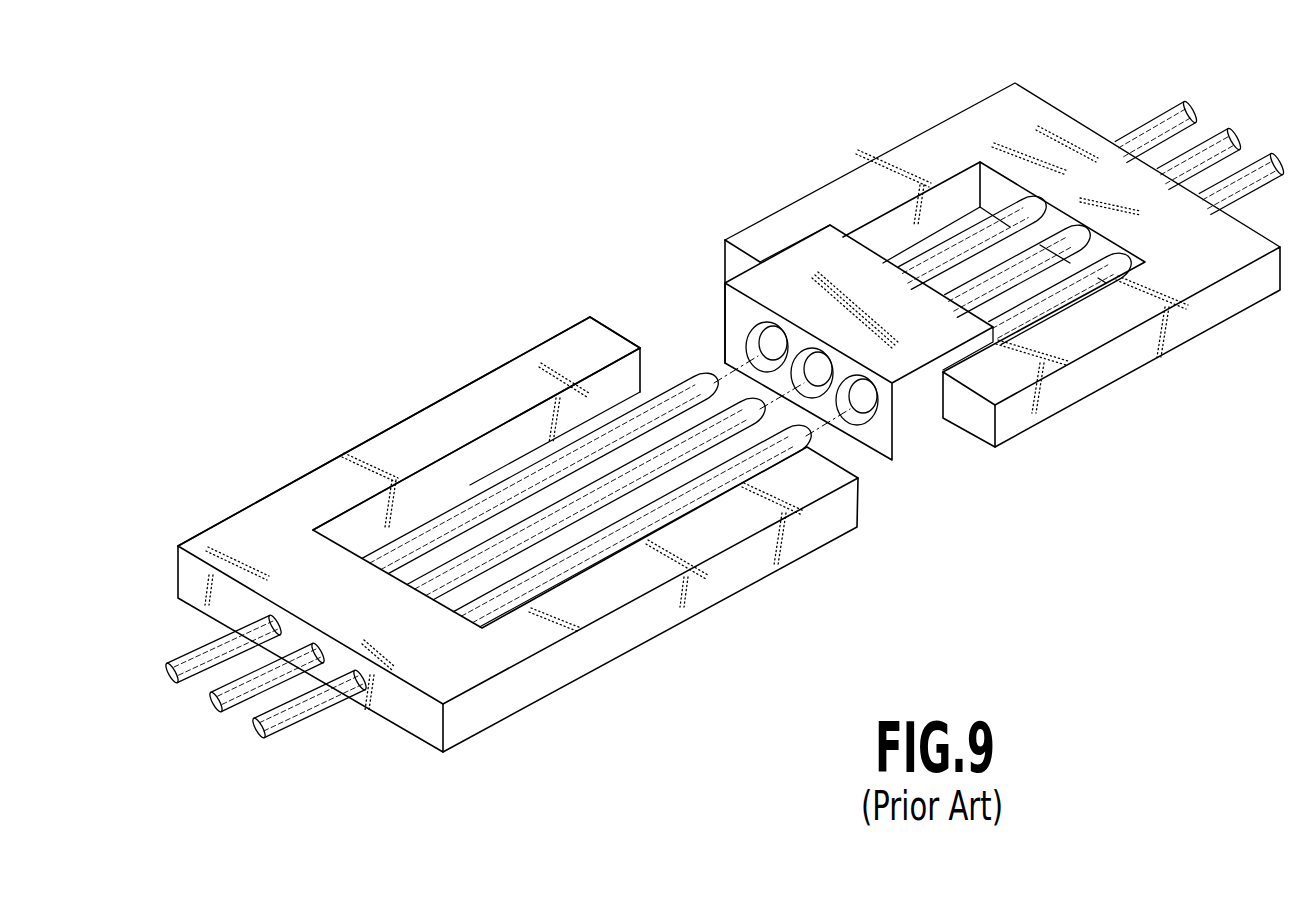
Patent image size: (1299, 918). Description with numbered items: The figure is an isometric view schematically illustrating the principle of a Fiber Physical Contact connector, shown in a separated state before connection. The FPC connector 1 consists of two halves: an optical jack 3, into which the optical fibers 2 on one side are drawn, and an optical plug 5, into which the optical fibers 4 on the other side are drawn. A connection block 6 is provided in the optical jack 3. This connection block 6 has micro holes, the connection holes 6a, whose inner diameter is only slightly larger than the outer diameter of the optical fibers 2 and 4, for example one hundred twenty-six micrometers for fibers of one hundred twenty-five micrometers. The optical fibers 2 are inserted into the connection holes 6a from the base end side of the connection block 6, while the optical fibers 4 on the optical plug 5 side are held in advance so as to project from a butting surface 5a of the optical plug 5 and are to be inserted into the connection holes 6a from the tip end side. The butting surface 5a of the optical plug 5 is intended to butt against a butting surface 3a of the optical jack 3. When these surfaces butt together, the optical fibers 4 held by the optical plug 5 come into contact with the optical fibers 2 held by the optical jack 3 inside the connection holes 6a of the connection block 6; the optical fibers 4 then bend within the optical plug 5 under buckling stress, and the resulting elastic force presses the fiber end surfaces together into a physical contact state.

The FPC connector 1 is at (725, 418).
The optical fibers 2 is at (1140, 128).
The optical jack 3 is at (952, 282).
The butting surface 3a is at (724, 258).
The optical fibers 4 is at (292, 728).
The optical plug 5 is at (511, 524).
The butting surface 5a is at (622, 332).
The connection block 6 is at (859, 339).
The connection holes 6a is at (866, 432).